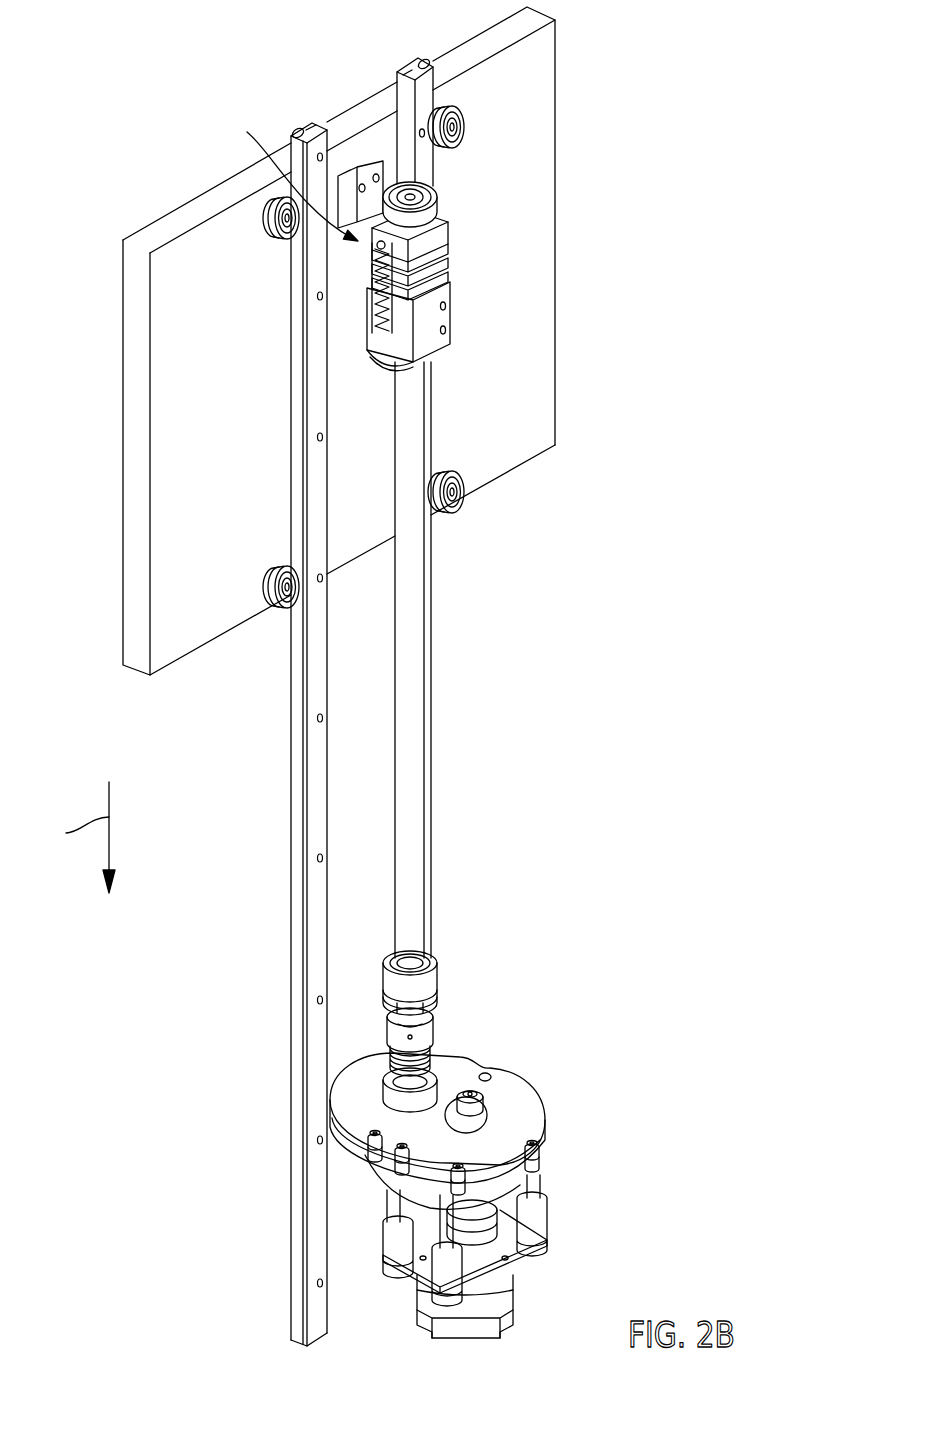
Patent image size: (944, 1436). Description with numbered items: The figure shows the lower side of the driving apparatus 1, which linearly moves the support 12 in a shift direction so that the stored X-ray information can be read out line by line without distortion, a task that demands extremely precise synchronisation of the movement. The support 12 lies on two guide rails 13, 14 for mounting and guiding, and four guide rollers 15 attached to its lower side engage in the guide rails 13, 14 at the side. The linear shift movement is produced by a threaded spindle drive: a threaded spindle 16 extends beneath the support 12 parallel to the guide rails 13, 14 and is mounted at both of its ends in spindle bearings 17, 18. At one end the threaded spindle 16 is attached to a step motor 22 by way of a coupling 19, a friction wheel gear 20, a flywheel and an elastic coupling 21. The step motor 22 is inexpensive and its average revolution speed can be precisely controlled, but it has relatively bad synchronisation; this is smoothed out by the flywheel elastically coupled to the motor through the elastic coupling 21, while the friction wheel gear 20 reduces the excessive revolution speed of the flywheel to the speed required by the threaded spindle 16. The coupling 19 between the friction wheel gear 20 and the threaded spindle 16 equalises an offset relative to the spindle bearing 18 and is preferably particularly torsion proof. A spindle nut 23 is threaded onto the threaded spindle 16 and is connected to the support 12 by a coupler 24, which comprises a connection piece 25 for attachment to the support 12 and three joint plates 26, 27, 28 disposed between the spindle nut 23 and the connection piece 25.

The driving apparatus 1 is at (105, 110).
The support 12 is at (548, 243).
The guide rail 13 is at (291, 742).
The guide rail 14 is at (433, 622).
The guide rollers 15 is at (464, 118).
The threaded spindle 16 is at (403, 717).
The spindle bearing 17 is at (435, 212).
The spindle bearing 18 is at (435, 977).
The coupling 19 is at (433, 1035).
The friction wheel gear 20 is at (530, 1110).
The elastic coupling 21 is at (485, 1227).
The step motor 22 is at (420, 1318).
The spindle nut 23 is at (447, 318).
The coupler 24 is at (288, 179).
The connection piece 25 is at (445, 233).
The joint plate 26 is at (450, 249).
The joint plate 27 is at (450, 263).
The joint plate 28 is at (450, 277).